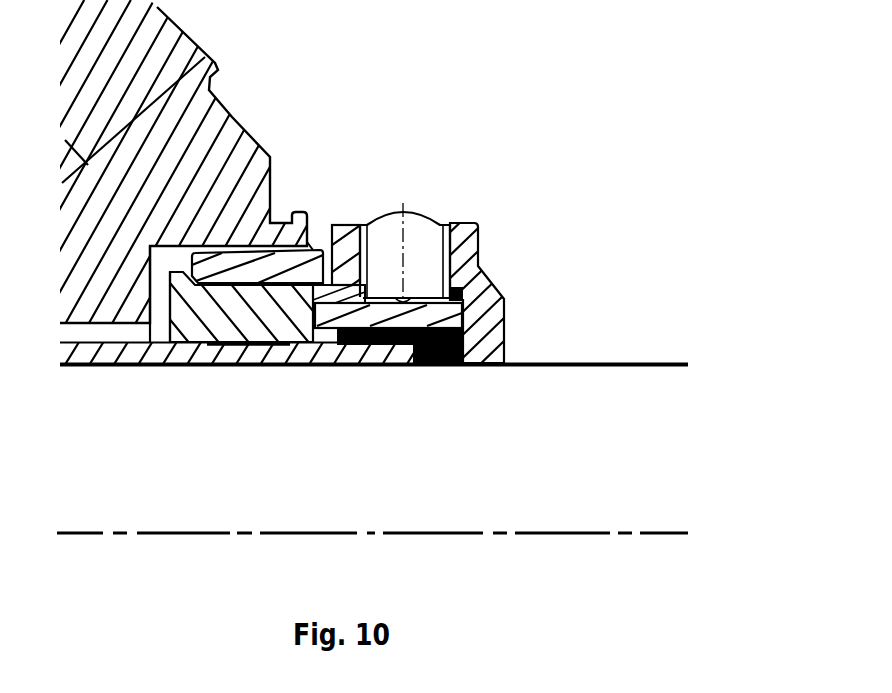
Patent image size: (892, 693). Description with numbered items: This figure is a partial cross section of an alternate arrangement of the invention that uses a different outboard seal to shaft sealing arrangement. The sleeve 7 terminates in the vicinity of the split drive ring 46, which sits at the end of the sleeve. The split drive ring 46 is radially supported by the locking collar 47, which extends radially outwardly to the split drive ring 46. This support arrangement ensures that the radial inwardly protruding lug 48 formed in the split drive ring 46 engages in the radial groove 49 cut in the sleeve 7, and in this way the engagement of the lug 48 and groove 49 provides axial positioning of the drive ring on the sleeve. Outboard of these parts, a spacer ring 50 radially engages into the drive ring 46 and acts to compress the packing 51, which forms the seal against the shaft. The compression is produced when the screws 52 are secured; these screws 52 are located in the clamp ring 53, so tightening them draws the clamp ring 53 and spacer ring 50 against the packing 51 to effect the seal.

The sleeve 7 is at (280, 367).
The split drive ring 46 is at (184, 318).
The locking collar 47 is at (320, 251).
The radial inwardly protruding lug 48 is at (206, 343).
The radial groove 49 is at (200, 312).
The spacer ring 50 is at (466, 308).
The packing 51 is at (442, 368).
The screws 52 is at (418, 240).
The clamp ring 53 is at (481, 233).